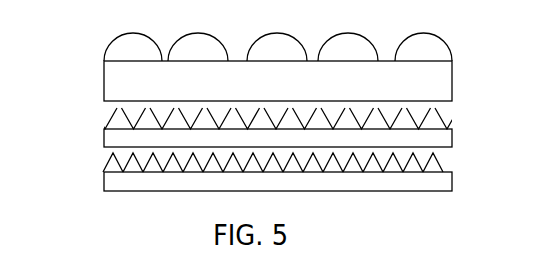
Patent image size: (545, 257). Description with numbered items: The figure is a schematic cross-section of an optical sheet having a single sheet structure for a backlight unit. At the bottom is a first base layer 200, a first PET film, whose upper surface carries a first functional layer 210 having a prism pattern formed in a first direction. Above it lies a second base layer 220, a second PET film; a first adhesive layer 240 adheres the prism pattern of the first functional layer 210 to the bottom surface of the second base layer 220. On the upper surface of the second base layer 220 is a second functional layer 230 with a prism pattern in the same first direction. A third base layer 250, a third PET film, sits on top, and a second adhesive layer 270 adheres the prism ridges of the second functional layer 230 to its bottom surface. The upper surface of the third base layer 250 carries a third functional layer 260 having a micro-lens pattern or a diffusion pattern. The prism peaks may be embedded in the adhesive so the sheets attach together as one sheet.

The first base layer 200 is at (453, 183).
The first functional layer 210 is at (447, 160).
The second base layer 220 is at (453, 132).
The second functional layer 230 is at (448, 112).
The first adhesive layer 240 is at (278, 165).
The third base layer 250 is at (452, 70).
The third functional layer 260 is at (446, 43).
The second adhesive layer 270 is at (278, 119).